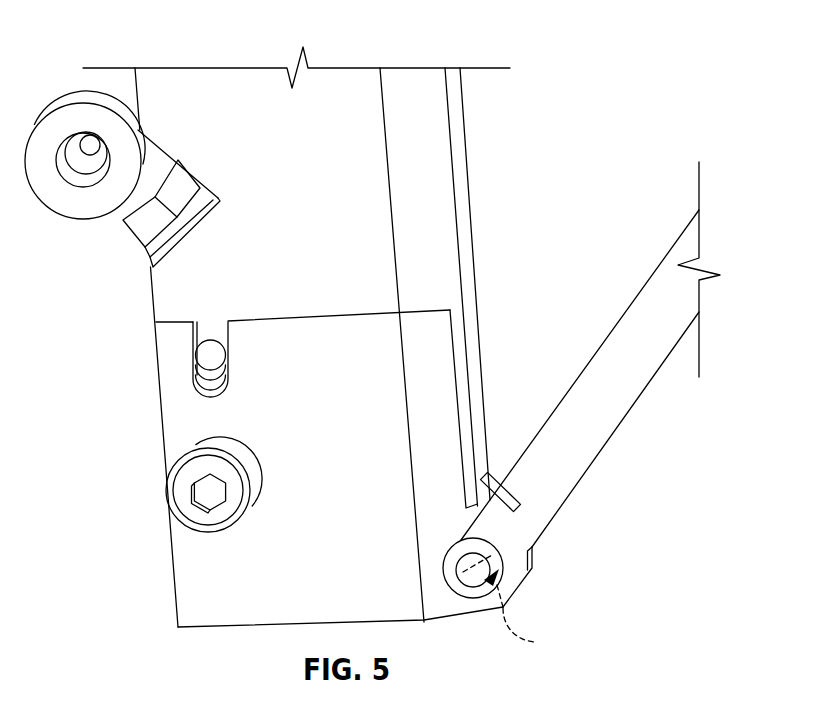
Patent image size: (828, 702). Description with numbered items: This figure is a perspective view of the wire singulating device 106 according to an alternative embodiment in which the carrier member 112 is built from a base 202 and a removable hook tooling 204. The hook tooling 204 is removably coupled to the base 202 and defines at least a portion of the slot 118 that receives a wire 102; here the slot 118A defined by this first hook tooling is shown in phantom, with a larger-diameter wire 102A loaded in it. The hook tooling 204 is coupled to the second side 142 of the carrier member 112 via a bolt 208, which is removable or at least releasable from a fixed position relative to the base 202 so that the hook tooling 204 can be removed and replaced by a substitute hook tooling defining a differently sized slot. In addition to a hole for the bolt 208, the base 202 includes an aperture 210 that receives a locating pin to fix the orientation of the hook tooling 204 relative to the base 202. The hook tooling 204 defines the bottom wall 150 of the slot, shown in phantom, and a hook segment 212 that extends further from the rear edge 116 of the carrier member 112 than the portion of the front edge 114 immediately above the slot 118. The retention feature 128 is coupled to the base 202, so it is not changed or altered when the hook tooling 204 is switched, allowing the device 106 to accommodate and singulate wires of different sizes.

The wire 102 is at (628, 360).
The wire 102A is at (545, 497).
The wire singulating device 106 is at (536, 82).
The carrier member 112 is at (302, 162).
The front edge 114 is at (482, 455).
The rear edge 116 is at (173, 605).
The slot 118 is at (535, 538).
The slot 118A is at (553, 633).
The retention feature 128 is at (490, 474).
The second side 142 is at (360, 265).
The bottom wall 150 is at (462, 580).
The base 202 is at (277, 231).
The hook tooling 204 is at (228, 557).
The bolt 208 is at (180, 483).
The aperture 210 is at (198, 352).
The hook segment 212 is at (512, 582).